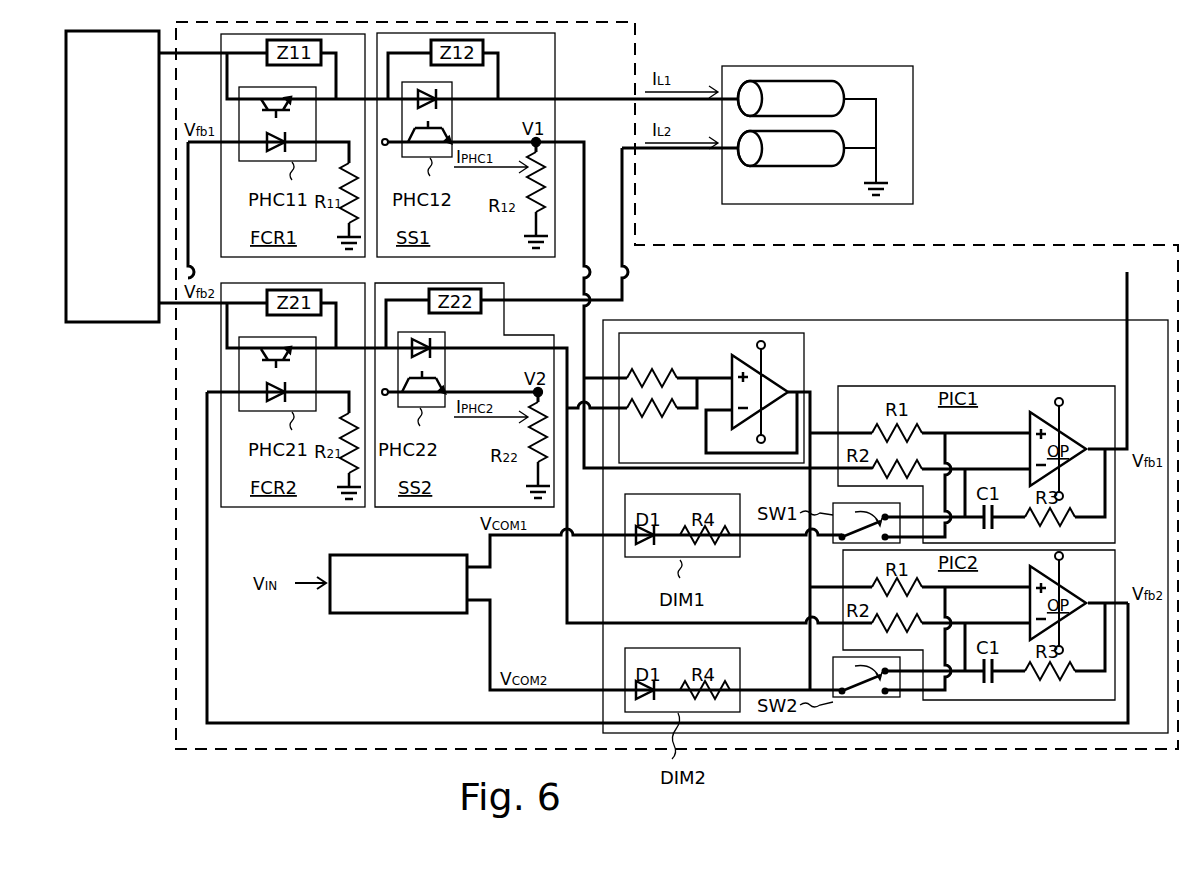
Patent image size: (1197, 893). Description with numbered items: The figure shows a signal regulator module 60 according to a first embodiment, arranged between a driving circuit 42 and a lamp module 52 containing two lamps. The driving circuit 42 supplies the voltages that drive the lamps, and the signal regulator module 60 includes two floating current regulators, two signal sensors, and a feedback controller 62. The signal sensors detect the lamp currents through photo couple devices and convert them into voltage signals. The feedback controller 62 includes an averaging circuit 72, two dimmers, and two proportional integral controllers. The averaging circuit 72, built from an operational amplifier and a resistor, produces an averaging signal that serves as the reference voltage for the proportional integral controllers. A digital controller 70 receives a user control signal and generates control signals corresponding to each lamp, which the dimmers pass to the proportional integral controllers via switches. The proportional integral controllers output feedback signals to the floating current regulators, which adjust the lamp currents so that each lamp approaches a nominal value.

The driving circuit 42 is at (131, 324).
The lamp module 52 is at (818, 66).
The signal regulator module 60 is at (966, 246).
The feedback controller 62 is at (886, 320).
The digital controller 70 is at (397, 617).
The averaging circuit 72 is at (806, 340).